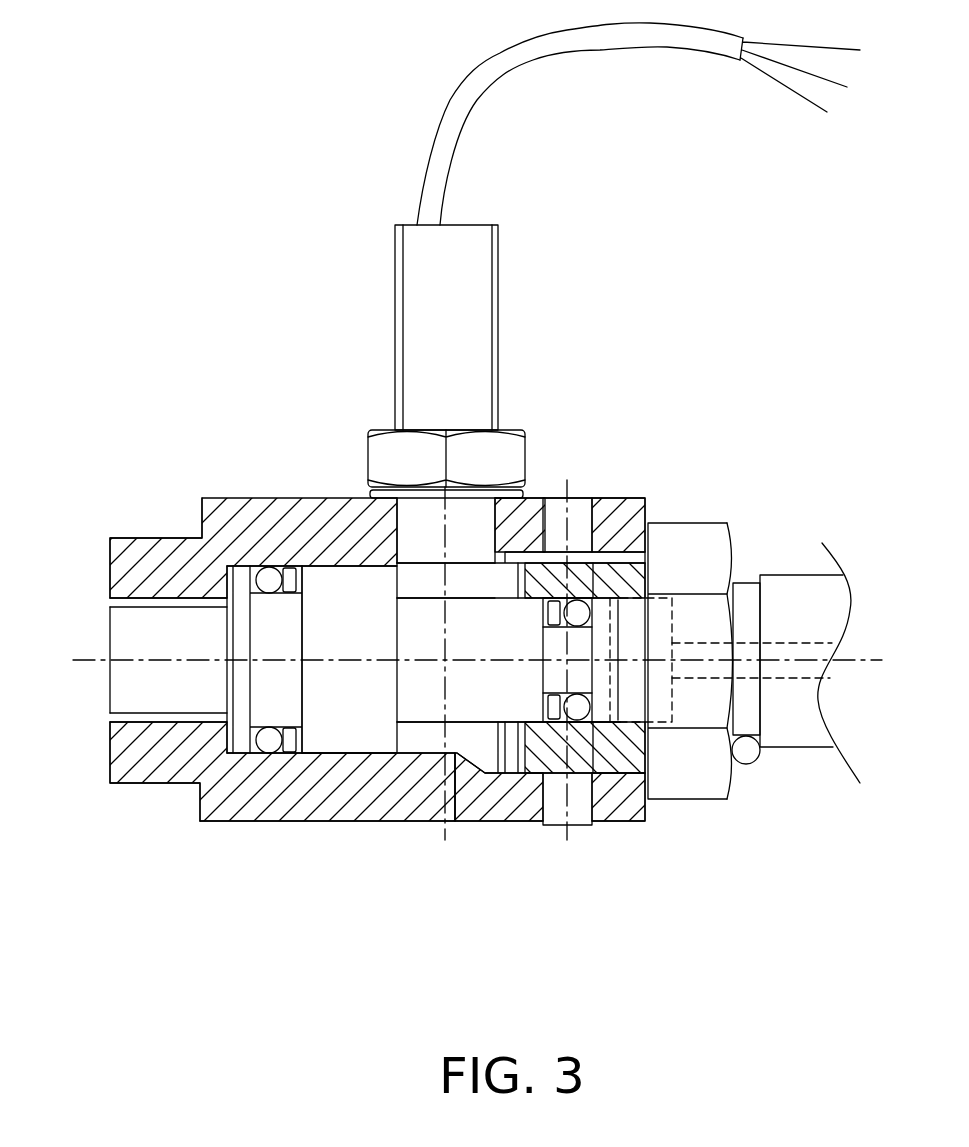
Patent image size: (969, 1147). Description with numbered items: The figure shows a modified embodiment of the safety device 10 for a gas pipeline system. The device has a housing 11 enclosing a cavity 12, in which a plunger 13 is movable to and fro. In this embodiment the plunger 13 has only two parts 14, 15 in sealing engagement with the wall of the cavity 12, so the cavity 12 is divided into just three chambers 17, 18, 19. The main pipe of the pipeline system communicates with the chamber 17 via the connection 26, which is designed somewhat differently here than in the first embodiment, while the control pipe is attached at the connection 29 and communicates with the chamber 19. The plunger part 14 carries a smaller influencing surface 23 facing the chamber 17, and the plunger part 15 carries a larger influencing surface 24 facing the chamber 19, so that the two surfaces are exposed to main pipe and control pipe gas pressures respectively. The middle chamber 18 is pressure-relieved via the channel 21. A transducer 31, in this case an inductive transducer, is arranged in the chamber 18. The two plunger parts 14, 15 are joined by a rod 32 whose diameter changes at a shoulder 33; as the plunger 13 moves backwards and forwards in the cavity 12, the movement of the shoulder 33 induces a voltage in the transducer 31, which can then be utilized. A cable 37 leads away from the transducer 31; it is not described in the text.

The safety device 10 is at (222, 486).
The housing 11 is at (180, 565).
The cavity 12 is at (412, 693).
The plunger 13 is at (345, 752).
The plunger part 14 is at (596, 740).
The plunger part 15 is at (283, 620).
The chamber 17 is at (627, 630).
The chamber 18 is at (548, 500).
The chamber 19 is at (210, 650).
The channel 21 is at (418, 742).
The influencing surface 23 is at (652, 690).
The influencing surface 24 is at (190, 728).
The connection 26 is at (800, 610).
The connection 29 is at (155, 688).
The transducer 31 is at (440, 373).
The rod 32 is at (478, 705).
The shoulder 33 is at (420, 565).
The sensor cable 37 is at (478, 88).